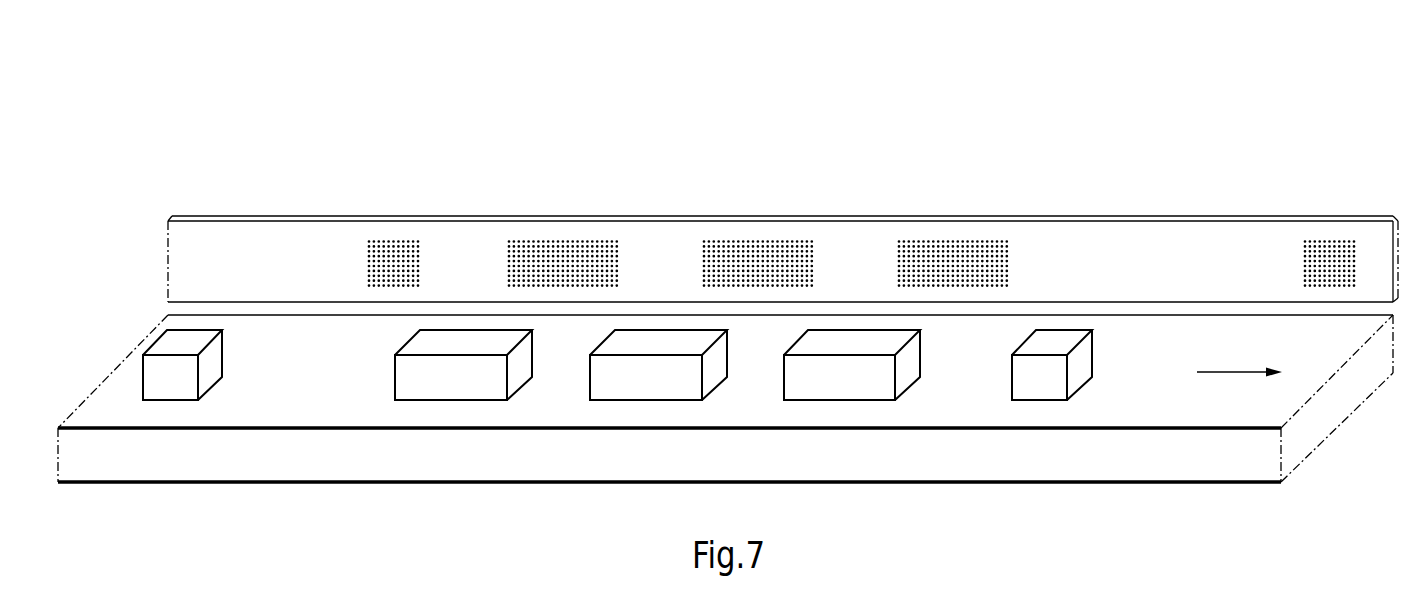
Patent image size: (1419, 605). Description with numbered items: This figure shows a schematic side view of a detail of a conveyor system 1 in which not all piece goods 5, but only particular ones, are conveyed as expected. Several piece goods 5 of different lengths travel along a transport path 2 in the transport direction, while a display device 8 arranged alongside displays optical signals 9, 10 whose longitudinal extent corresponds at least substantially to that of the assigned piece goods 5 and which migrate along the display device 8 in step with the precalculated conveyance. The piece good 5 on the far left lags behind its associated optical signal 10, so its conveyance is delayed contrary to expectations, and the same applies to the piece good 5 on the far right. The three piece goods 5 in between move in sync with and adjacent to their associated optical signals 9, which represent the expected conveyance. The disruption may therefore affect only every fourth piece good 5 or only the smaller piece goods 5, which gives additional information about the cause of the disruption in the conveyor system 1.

The conveyor system 1 is at (176, 76).
The transport path 2 is at (327, 385).
The piece goods 5 is at (215, 360).
The display device 8 is at (220, 219).
The optical signal 9 is at (490, 262).
The optical signal 10 is at (344, 262).